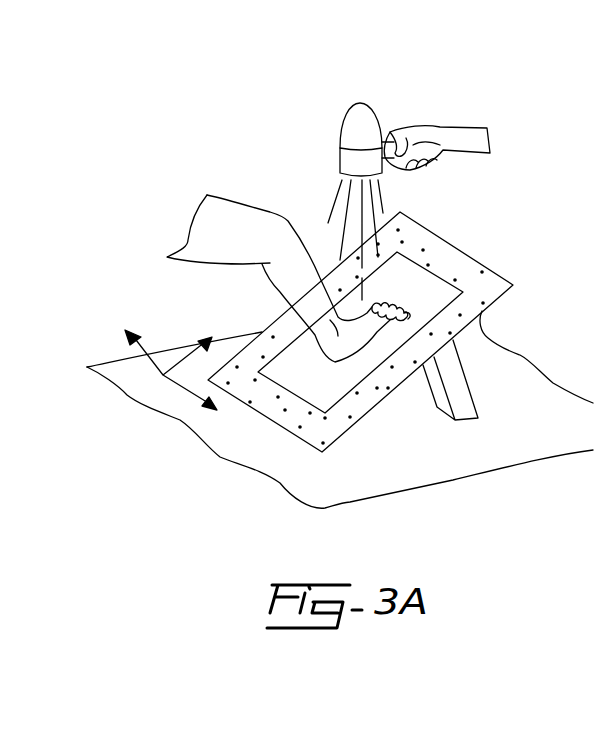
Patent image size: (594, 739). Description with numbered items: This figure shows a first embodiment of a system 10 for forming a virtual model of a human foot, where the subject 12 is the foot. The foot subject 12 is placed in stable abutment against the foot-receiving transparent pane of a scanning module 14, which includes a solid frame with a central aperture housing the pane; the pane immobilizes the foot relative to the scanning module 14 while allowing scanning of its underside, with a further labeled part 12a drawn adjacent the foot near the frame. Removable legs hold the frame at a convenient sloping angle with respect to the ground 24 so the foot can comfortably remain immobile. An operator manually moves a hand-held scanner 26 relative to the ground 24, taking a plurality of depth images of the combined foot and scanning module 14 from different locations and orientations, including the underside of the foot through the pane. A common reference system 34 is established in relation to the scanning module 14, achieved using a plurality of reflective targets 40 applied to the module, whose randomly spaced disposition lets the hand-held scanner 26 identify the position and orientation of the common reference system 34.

The system 10 is at (479, 95).
The subject 12 is at (369, 341).
The frame opening 12a is at (380, 327).
The scanning module 14 is at (486, 314).
The ground 24 is at (537, 423).
The hand-held scanner 26 is at (368, 117).
The common reference system 34 is at (180, 359).
The reflective targets 40 is at (455, 260).